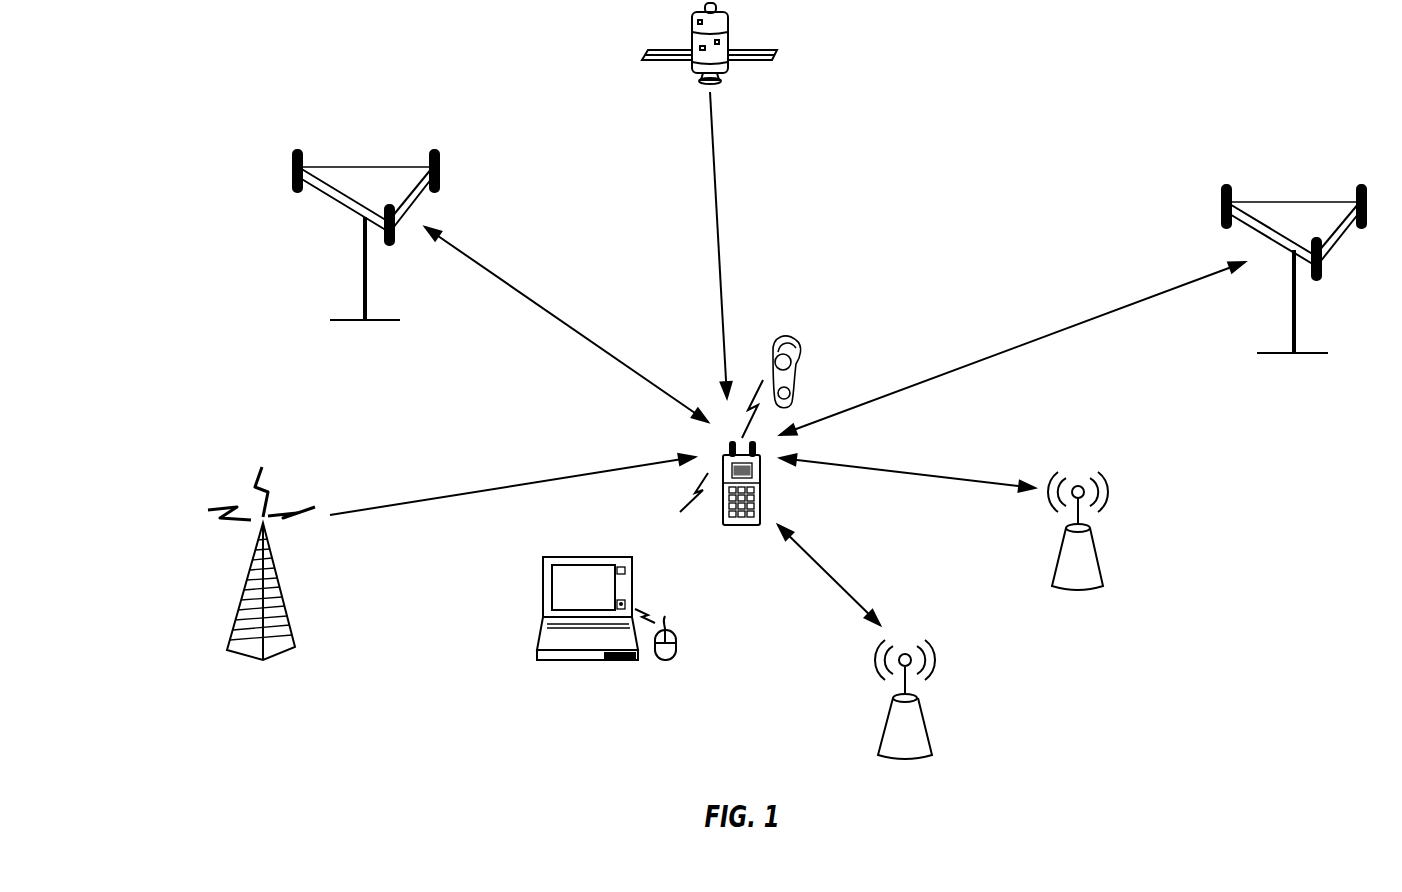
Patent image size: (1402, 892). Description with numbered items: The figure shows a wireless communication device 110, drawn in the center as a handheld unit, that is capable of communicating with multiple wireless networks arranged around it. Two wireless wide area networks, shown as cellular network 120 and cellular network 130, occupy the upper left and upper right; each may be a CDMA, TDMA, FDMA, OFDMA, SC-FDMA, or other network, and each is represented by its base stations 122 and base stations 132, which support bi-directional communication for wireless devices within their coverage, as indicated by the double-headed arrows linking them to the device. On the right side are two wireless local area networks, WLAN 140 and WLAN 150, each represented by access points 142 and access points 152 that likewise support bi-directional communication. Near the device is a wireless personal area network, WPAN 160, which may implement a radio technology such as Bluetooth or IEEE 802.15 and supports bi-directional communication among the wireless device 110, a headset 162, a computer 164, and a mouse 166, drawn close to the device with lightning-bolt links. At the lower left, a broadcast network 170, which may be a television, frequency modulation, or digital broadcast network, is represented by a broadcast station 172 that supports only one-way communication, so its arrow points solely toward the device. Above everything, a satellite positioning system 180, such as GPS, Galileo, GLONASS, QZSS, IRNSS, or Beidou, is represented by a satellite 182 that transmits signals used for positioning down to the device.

The wireless communication device 110 is at (760, 490).
The cellular network 120 is at (230, 284).
The base stations 122 is at (358, 165).
The cellular network 130 is at (1122, 254).
The base stations 132 is at (1286, 200).
The wireless local area network 140 is at (1018, 735).
The access points 142 is at (932, 728).
The wireless local area network 150 is at (1190, 567).
The access points 152 is at (1102, 558).
The wireless personal area network 160 is at (840, 362).
The headset 162 is at (776, 340).
The computer 164 is at (582, 557).
The mouse 166 is at (677, 635).
The broadcast network 170 is at (110, 607).
The broadcast stations 172 is at (288, 600).
The satellite positioning system 180 is at (868, 109).
The satellites 182 is at (758, 52).